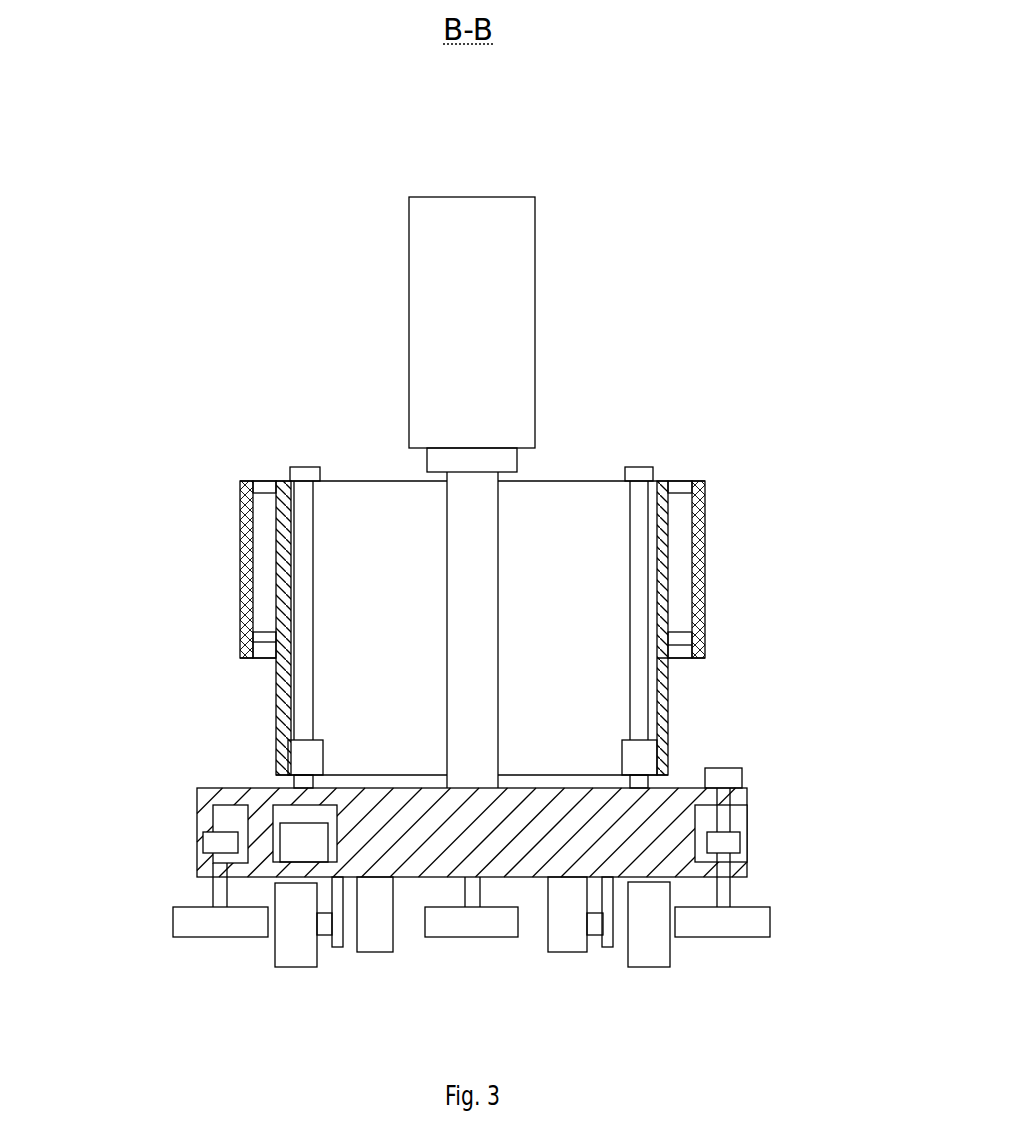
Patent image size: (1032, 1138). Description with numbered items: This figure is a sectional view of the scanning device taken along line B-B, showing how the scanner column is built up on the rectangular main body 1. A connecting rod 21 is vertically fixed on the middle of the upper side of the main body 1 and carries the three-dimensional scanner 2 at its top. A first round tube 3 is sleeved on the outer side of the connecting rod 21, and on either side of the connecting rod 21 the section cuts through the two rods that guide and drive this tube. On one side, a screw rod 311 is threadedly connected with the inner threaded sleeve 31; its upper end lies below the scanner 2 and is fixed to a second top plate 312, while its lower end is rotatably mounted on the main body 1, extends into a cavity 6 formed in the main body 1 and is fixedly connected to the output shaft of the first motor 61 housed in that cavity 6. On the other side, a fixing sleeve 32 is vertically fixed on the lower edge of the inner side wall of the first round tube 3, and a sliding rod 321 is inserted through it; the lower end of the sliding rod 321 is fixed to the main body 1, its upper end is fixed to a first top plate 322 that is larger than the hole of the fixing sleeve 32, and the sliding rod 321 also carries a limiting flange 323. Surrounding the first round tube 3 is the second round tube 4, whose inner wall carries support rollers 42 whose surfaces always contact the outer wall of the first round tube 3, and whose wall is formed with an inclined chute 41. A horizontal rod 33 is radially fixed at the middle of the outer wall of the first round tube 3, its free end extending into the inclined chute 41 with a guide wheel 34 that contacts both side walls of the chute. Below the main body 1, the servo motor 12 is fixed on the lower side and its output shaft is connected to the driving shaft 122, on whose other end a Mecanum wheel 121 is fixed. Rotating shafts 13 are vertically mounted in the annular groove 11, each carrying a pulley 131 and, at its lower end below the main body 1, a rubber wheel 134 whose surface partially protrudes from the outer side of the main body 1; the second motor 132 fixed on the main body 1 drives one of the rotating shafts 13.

The main body 1 is at (208, 790).
The annular groove 11 is at (205, 815).
The servo motor 12 is at (380, 935).
The Mecanum wheel 121 is at (288, 950).
The driving shaft 122 is at (325, 940).
The rotating shaft 13 is at (200, 857).
The pulley 131 is at (735, 840).
The second motor 132 is at (732, 782).
The rubber wheel 134 is at (735, 925).
The 3D scanner 2 is at (488, 307).
The connecting rod 21 is at (470, 512).
The first round tube 3 is at (280, 675).
The inner threaded sleeve 31 is at (320, 755).
The screw rod 311 is at (303, 653).
The second top plate 312 is at (303, 467).
The fixing sleeve 32 is at (622, 757).
The sliding rod 321 is at (642, 592).
The first top plate 322 is at (640, 467).
The limiting flange 323 is at (620, 778).
The horizontal rod 33 is at (265, 630).
The guide wheel 34 is at (700, 630).
The second round tube 4 is at (242, 493).
The inclined chute 41 is at (700, 540).
The support roller 42 is at (700, 487).
The cavity 6 is at (335, 812).
The first motor 61 is at (298, 840).